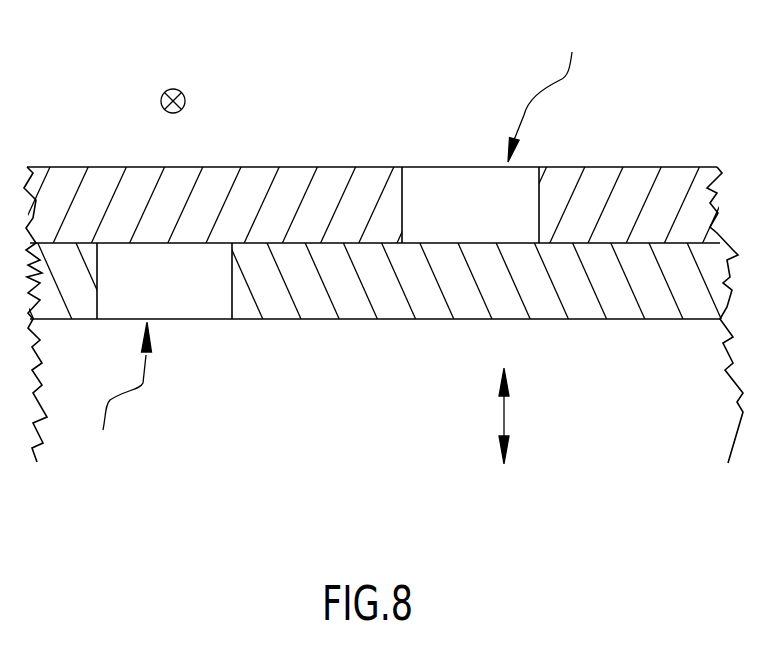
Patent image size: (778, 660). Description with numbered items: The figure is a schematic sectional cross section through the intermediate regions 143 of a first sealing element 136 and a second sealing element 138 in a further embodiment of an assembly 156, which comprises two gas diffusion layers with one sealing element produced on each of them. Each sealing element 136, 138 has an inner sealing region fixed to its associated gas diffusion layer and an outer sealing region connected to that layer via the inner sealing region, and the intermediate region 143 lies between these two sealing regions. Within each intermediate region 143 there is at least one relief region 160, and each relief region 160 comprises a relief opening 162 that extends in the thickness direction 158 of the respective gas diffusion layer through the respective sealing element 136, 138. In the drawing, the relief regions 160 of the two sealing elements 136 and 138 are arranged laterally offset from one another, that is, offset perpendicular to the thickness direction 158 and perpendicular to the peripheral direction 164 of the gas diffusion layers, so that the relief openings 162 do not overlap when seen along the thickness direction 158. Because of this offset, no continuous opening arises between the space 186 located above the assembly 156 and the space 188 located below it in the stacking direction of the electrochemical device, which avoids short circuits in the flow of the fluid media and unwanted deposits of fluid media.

The assembly 156 is at (371, 242).
The peripheral direction 164 is at (173, 89).
The space 186 is at (293, 122).
The intermediate region 143 is at (353, 193).
The relief opening 162 is at (464, 189).
The relief region 160 is at (335, 242).
The second sealing element 138 is at (372, 129).
The space 188 is at (293, 393).
The thickness direction 158 is at (505, 418).
The first sealing element 136 is at (375, 359).